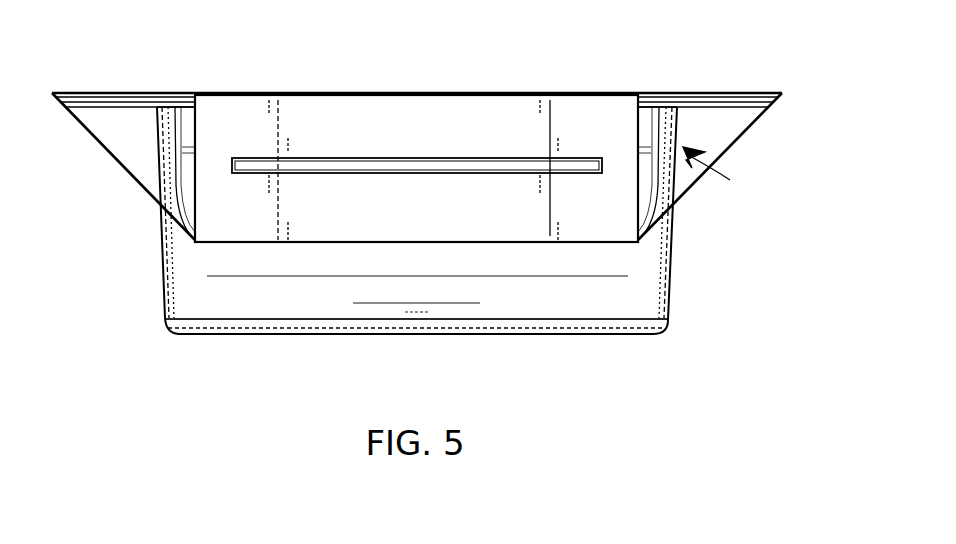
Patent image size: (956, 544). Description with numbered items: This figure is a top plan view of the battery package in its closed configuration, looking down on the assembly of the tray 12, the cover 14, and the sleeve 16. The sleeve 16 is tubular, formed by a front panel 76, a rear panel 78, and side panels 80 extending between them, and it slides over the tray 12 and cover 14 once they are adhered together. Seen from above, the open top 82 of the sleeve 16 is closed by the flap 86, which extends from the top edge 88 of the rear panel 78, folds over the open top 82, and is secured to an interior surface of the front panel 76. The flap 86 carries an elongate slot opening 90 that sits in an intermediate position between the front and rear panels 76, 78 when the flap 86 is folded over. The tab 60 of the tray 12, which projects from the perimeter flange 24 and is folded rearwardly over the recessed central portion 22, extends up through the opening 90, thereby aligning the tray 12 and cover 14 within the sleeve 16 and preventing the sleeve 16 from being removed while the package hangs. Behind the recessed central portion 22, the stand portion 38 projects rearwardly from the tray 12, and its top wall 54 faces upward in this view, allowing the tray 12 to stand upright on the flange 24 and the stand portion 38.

The tray 12 is at (122, 101).
The cover 14 is at (688, 93).
The sleeve 16 is at (758, 117).
The recessed central portion 22 is at (165, 212).
The perimeter flange 24 is at (75, 120).
The stand portion 38 is at (605, 310).
The top wall 54 is at (503, 308).
The tab 60 is at (483, 158).
The front panel 76 is at (172, 95).
The rear panel 78 is at (233, 242).
The side panels 80 is at (132, 182).
The open top 82 is at (730, 180).
The flap 86 is at (370, 112).
The top edge 88 is at (310, 242).
The elongate slot opening 90 is at (590, 173).